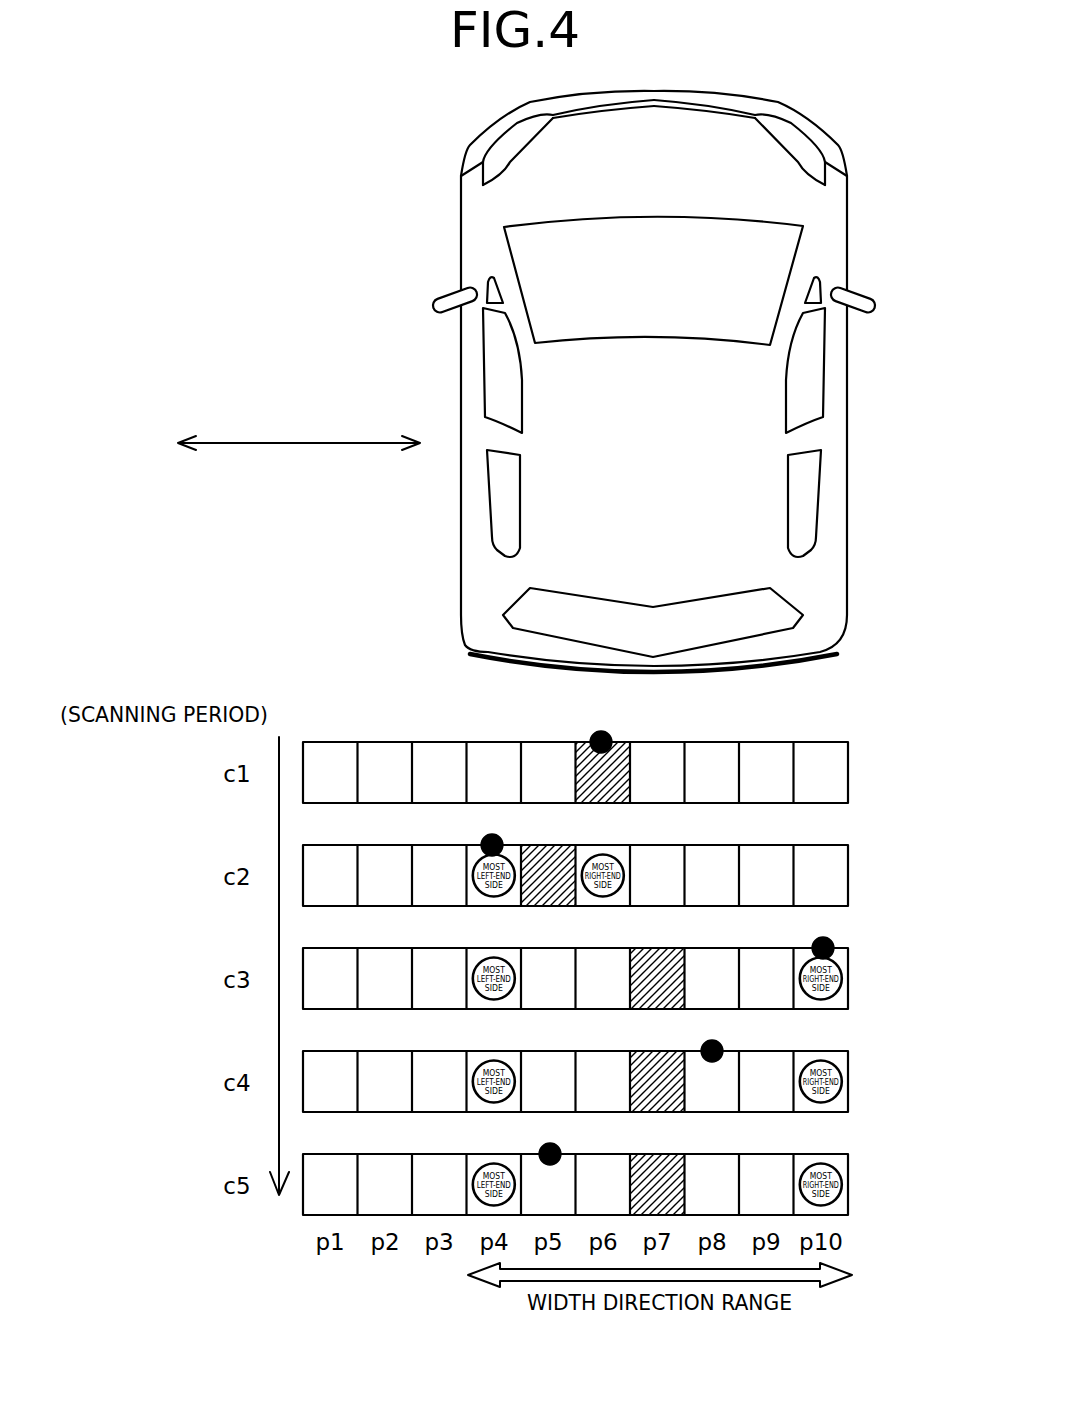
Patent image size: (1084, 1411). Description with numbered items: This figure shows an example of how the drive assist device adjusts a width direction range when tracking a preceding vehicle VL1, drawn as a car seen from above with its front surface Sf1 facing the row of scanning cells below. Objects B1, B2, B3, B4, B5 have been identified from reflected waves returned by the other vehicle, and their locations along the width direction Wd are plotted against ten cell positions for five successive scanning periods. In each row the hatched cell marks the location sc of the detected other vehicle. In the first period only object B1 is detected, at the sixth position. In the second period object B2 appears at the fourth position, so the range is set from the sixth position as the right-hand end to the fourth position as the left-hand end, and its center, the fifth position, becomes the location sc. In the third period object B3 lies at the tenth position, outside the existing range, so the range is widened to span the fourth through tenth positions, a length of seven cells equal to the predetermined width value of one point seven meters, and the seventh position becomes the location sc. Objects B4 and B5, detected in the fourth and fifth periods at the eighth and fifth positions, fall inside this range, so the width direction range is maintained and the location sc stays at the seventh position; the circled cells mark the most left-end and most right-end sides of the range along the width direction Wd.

The preceding vehicle VL1 is at (847, 425).
The front surface of vehicle Sf1 is at (765, 671).
The width direction Wd is at (299, 448).
The object B1 is at (604, 733).
The object B2 is at (495, 836).
The object B3 is at (826, 939).
The object B4 is at (715, 1042).
The object B5 is at (553, 1145).
The position of the detected other vehicle sc is at (604, 812).